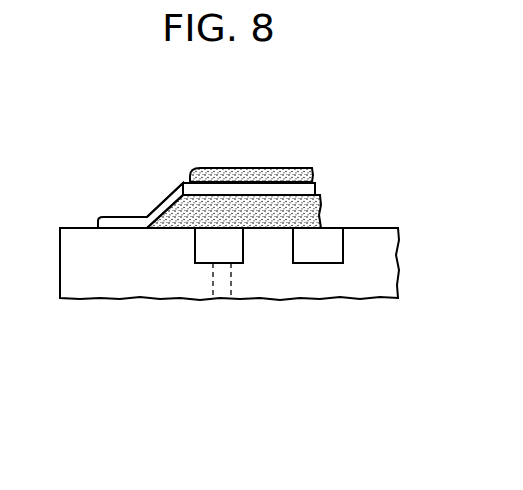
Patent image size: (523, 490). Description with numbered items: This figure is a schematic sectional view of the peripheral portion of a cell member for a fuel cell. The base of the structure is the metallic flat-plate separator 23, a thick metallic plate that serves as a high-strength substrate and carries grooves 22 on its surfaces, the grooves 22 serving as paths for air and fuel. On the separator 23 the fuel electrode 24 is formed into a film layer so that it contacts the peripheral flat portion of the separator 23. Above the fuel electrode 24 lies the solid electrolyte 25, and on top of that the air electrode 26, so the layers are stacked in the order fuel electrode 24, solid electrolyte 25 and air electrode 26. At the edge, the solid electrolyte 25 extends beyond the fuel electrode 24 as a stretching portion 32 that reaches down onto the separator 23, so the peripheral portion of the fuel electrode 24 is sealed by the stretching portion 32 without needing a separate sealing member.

The grooves 22 is at (323, 252).
The metallic flat-plate separator 23 is at (373, 227).
The fuel electrode 24 is at (322, 210).
The solid electrolyte 25 is at (176, 189).
The air electrode 26 is at (222, 168).
The stretching portion 32 is at (97, 217).